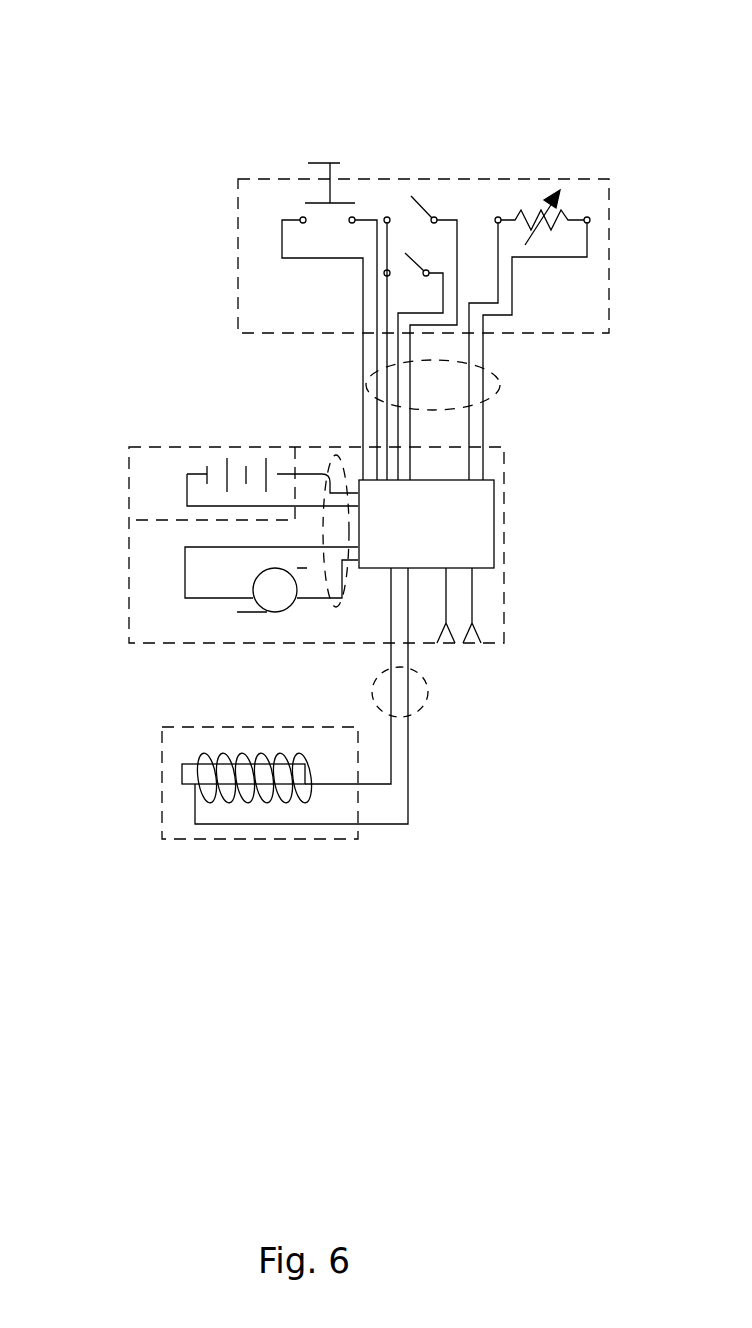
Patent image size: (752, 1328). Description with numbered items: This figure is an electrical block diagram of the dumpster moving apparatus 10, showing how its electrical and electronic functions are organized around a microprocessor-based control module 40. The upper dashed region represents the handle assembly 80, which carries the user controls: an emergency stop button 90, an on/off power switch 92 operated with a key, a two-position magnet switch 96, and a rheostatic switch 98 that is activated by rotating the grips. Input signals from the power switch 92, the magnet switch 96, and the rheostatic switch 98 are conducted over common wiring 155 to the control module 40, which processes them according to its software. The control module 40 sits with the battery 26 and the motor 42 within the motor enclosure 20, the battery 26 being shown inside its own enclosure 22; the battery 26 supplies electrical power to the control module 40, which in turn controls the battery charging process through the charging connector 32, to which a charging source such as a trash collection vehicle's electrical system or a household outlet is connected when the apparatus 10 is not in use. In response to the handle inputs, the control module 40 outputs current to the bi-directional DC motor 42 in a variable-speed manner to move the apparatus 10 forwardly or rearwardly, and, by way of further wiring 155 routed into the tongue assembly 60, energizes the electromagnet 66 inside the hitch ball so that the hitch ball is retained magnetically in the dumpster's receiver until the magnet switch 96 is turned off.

The dumpster moving apparatus 10 is at (103, 174).
The handle assembly 80 is at (238, 223).
The emergency stop button 90 is at (315, 190).
The power switch 92 is at (405, 208).
The magnet switch 96 is at (433, 252).
The rheostatic switch 98 is at (567, 203).
The motor enclosure 20 is at (128, 542).
The enclosure 22 is at (168, 515).
The battery 26 is at (217, 468).
The motor 42 is at (275, 613).
The control module 40 is at (473, 520).
The charging connector 32 is at (477, 652).
The electric wiring 155 is at (502, 393).
The tongue assembly 60 is at (160, 750).
The electromagnet 66 is at (187, 773).